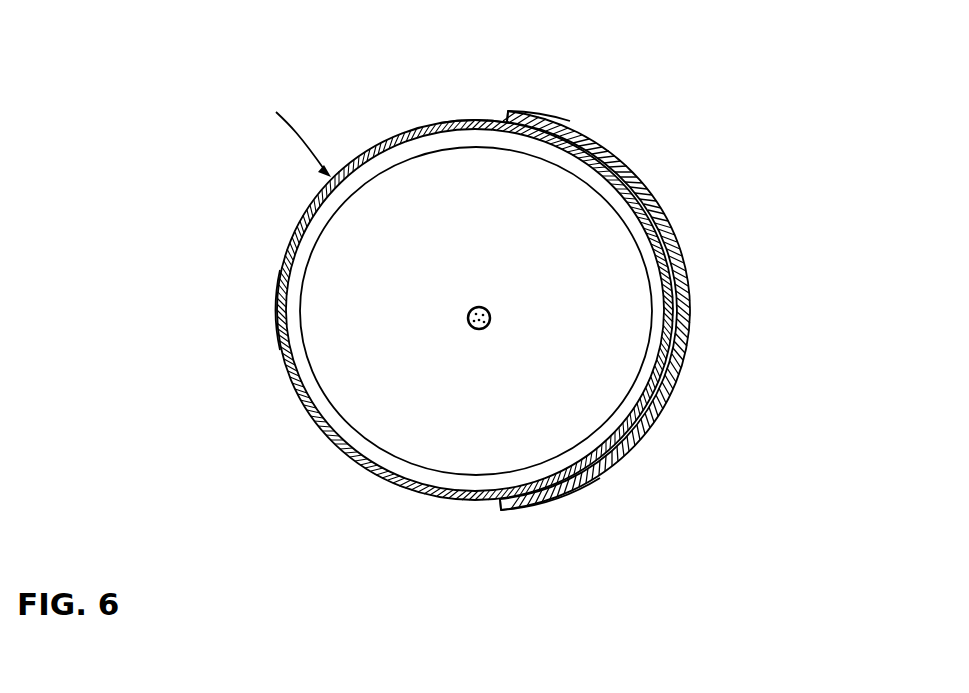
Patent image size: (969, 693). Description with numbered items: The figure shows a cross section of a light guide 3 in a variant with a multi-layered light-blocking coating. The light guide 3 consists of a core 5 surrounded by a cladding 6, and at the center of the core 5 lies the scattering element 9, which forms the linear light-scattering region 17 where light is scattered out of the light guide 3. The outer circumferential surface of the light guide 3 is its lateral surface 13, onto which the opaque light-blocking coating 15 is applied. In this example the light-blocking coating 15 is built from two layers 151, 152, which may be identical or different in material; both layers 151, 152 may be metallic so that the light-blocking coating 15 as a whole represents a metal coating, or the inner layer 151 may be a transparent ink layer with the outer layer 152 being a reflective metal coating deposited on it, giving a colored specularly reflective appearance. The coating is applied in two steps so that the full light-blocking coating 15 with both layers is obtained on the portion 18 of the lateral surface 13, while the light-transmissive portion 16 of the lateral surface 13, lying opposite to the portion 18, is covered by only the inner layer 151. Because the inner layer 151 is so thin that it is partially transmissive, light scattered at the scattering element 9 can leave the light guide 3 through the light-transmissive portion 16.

The light guide 3 is at (293, 127).
The core 5 is at (512, 425).
The cladding 6 is at (386, 158).
The scattering element 9 is at (463, 332).
The lateral surface 13 is at (298, 212).
The light-blocking coating 15 is at (697, 275).
The light-transmissive portion 16 is at (276, 326).
The linear light-scattering region 17 is at (463, 332).
The portion of lateral surface opposite to light-transmissive portion 18 is at (638, 437).
The inner layer 151 is at (483, 118).
The outer layer 152 is at (565, 118).